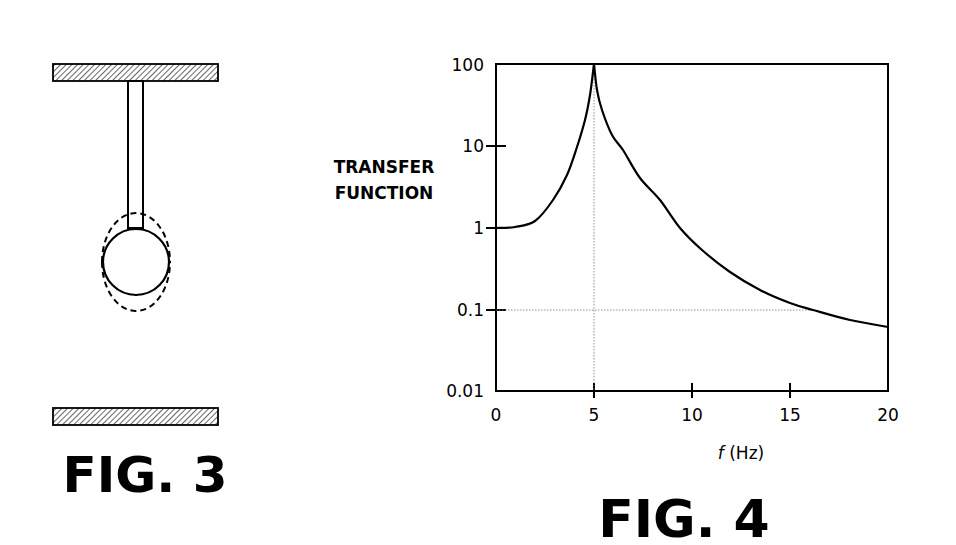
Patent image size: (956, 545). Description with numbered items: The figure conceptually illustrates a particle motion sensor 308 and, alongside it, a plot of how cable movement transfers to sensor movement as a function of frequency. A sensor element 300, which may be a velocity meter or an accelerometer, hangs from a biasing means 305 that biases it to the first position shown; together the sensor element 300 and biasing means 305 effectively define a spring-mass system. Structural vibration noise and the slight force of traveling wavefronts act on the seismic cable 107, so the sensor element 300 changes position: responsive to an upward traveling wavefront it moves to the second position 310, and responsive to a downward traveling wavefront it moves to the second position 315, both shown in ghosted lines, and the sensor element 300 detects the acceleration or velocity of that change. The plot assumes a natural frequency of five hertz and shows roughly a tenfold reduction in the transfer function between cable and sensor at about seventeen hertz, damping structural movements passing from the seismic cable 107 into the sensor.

The seismic cable 107 is at (136, 65).
The pendulum sensor assembly 308 is at (95, 196).
The biasing means 305 is at (127, 180).
The sensor element 300 is at (103, 260).
The second position 315 is at (103, 228).
The second position 310 is at (103, 296).